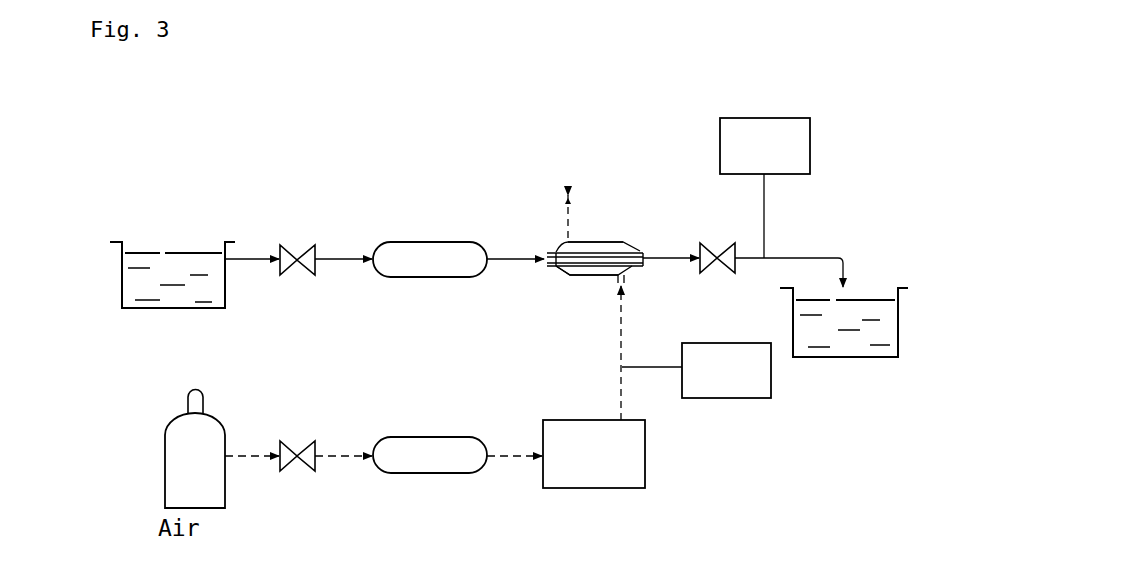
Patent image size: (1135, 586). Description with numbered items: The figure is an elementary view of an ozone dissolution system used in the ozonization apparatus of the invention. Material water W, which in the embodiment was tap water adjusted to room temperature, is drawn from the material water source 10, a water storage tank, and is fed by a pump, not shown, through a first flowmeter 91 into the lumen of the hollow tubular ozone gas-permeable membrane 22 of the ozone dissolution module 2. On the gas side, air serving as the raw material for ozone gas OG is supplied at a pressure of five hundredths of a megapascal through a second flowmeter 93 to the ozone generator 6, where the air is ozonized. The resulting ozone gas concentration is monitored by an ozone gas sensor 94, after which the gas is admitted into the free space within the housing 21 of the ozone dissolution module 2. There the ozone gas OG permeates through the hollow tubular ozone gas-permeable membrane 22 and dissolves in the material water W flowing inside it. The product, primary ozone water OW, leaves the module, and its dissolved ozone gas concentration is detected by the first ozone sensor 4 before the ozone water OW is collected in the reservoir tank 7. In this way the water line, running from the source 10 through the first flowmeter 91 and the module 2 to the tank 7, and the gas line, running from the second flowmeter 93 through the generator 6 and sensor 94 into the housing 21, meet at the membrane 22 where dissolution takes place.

The material water source 10 is at (229, 283).
The material water W is at (190, 264).
The first flowmeter 91 is at (434, 242).
The ozone dissolution module 2 is at (598, 237).
The housing 21 is at (562, 273).
The ozone gas-permeable membrane 22 is at (622, 248).
The primary ozone water OW is at (667, 259).
The first ozone sensor 4 is at (744, 116).
The reservoir tank 7 is at (903, 283).
The ozone gas sensor 94 is at (727, 400).
The second flowmeter 93 is at (427, 437).
The ozone generator 6 is at (608, 492).
The ozone gas OG is at (620, 400).